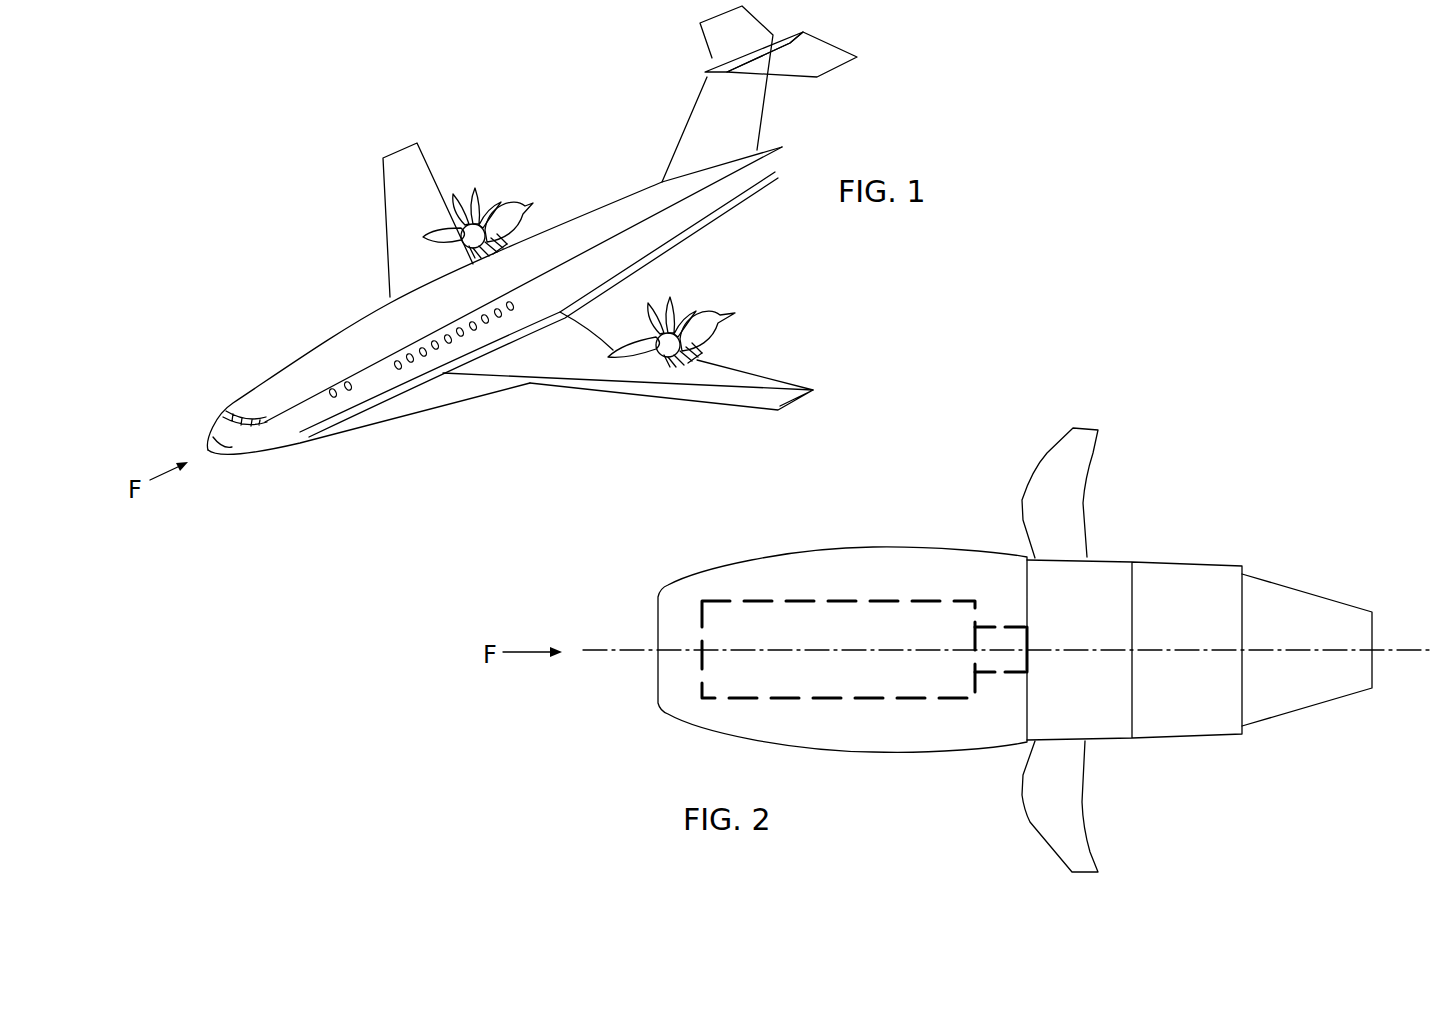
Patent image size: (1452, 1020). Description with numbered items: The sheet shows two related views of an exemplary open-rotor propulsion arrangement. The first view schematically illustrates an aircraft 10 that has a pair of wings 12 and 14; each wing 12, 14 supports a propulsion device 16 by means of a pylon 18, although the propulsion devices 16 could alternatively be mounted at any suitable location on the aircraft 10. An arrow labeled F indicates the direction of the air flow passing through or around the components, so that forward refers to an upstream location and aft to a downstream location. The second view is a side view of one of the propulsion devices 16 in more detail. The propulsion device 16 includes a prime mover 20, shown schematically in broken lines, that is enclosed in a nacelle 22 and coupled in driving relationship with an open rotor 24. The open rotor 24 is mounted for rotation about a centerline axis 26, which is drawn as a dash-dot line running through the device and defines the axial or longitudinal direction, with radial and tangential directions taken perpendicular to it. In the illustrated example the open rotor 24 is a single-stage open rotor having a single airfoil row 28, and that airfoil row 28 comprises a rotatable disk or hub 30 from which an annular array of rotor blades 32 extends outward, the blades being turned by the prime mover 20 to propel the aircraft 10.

In FIG. 1, the aircraft 10 is at (448, 88).
In FIG. 1, the wing 12 is at (519, 366).
In FIG. 1, the wing 14 is at (410, 221).
In FIG. 1, the propulsion device 16 is at (498, 170).
In FIG. 2, the propulsion device 16 is at (1281, 462).
In FIG. 1, the pylon 18 is at (447, 233).
In FIG. 2, the prime mover 20 is at (743, 710).
In FIG. 2, the nacelle 22 is at (688, 578).
In FIG. 2, the open rotor 24 is at (1120, 498).
In FIG. 2, the centerline axis 26 is at (1415, 650).
In FIG. 2, the airfoil row 28 is at (1113, 877).
In FIG. 2, the hub 30 is at (1108, 578).
In FIG. 2, the rotor blades 32 is at (1056, 462).